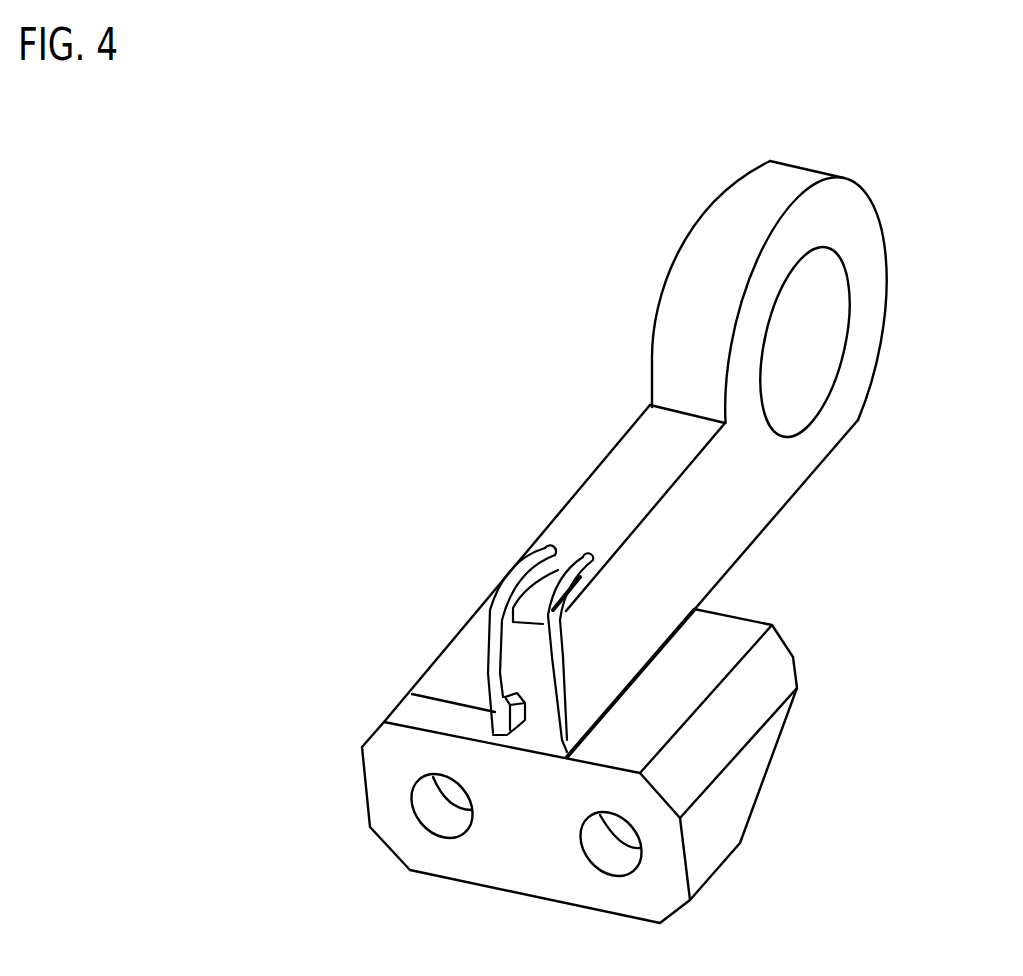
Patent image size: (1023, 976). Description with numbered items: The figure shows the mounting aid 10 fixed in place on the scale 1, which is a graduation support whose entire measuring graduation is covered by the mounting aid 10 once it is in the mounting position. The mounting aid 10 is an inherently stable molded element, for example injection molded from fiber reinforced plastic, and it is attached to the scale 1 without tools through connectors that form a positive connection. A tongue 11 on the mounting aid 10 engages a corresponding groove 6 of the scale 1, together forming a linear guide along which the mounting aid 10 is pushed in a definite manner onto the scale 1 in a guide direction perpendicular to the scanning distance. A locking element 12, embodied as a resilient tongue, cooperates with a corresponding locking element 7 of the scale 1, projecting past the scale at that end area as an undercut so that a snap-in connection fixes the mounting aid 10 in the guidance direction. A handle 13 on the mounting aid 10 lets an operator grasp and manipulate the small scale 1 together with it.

The scale 1 is at (780, 813).
The groove 6 is at (527, 703).
The locking element of the scale 7 is at (505, 611).
The mounting aid 10 is at (585, 445).
The tongue 11 is at (505, 712).
The locking element 12 is at (547, 585).
The handle 13 is at (871, 266).